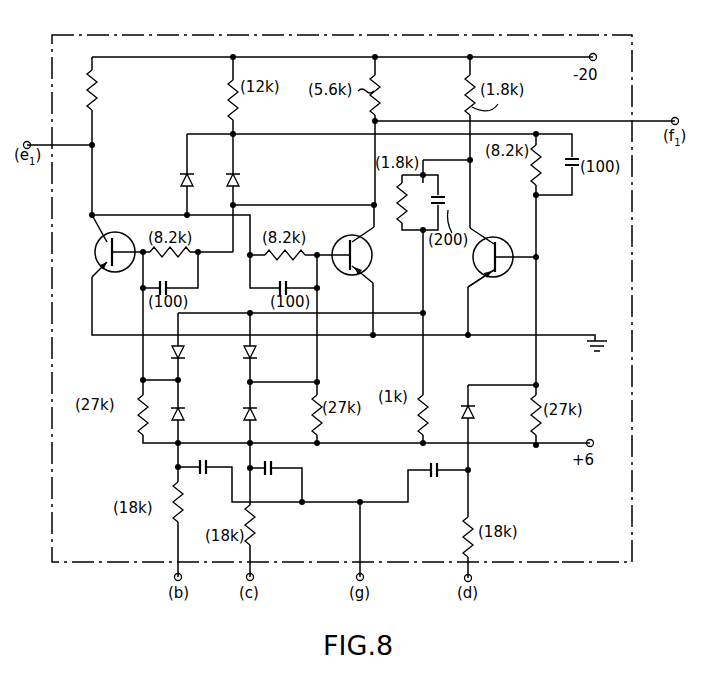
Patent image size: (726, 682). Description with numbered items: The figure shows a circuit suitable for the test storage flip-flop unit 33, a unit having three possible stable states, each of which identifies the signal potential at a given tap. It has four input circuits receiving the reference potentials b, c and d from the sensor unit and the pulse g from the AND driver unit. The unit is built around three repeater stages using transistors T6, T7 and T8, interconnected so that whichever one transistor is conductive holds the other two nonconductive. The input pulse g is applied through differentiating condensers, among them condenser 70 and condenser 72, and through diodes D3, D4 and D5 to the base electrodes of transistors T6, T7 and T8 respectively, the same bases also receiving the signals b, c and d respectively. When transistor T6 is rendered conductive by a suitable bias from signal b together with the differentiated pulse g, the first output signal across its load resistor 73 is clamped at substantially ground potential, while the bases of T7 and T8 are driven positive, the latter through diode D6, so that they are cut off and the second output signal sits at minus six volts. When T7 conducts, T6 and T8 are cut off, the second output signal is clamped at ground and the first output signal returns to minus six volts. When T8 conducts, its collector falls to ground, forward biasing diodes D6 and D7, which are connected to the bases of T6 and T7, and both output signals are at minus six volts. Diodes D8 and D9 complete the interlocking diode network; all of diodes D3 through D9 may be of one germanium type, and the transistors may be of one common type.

The test storage flip-flop unit 33 is at (208, 35).
The load resistor 73 is at (95, 91).
The differentiating condenser 70 is at (203, 476).
The differentiating condenser 72 is at (435, 478).
The diode D3 is at (183, 417).
The diode D4 is at (255, 417).
The diode D5 is at (473, 415).
The diode D6 is at (182, 181).
The diode D7 is at (238, 181).
The diode D8 is at (184, 355).
The diode D9 is at (257, 356).
The transistor T6 is at (131, 271).
The transistor T7 is at (341, 237).
The transistor T8 is at (506, 273).